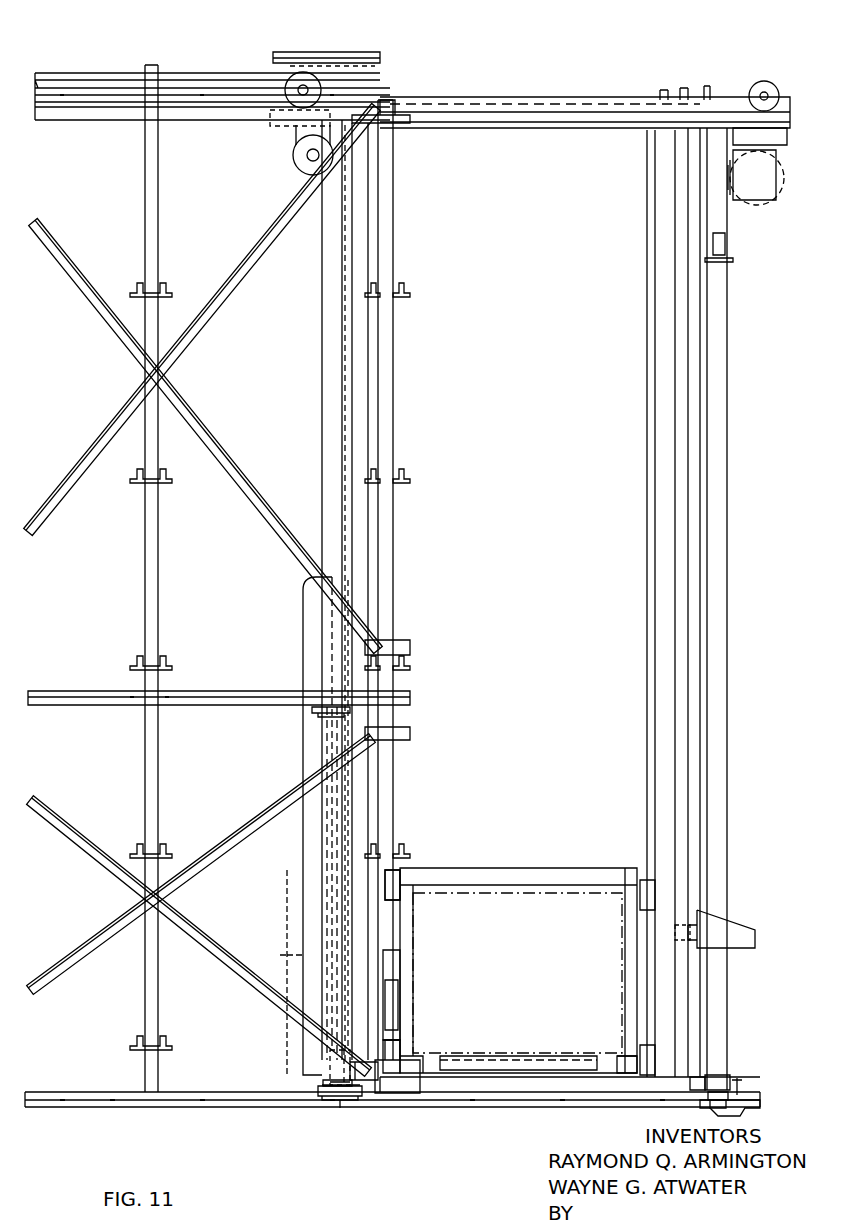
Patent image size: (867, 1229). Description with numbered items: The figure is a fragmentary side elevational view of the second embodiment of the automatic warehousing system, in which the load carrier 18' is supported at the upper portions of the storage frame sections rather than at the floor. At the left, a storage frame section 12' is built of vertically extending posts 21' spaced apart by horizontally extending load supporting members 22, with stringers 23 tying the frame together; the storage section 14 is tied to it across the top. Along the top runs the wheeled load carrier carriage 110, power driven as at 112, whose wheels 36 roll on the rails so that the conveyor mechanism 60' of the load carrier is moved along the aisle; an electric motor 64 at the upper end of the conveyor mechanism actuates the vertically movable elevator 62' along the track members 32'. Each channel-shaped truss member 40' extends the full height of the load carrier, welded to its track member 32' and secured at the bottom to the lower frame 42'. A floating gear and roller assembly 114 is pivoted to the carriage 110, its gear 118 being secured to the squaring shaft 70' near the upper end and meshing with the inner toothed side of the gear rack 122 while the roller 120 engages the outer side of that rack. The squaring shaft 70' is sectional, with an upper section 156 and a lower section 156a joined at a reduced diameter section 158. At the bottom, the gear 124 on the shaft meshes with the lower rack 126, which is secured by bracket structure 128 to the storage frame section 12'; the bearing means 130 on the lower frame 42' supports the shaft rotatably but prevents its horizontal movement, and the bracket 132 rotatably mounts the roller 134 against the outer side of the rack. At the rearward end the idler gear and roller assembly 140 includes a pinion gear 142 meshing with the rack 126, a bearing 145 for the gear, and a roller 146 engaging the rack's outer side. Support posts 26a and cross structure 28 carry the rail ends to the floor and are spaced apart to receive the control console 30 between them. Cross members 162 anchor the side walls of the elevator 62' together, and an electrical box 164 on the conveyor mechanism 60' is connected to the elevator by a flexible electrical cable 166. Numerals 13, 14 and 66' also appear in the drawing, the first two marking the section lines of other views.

The load carrier carriage 110 is at (579, 78).
The power drive 112 is at (296, 166).
The floating gear and roller assembly 114 is at (378, 60).
The gear 118 is at (310, 70).
The roller 120 is at (305, 122).
The gear rack 122 is at (195, 79).
The storage frame section 12' is at (210, 1116).
The pin 13 is at (302, 1084).
The storage section 14 is at (480, 1126).
The load carrier 18' is at (584, 846).
The post 21' is at (265, 578).
The load supporting member 22 is at (135, 292).
The stringer 23 is at (180, 394).
The support post 26a is at (728, 565).
The cross structure 28 is at (730, 237).
The control console 30 is at (745, 934).
The track member 32' is at (519, 588).
The wheel 36 is at (285, 84).
The truss means 40' is at (526, 600).
The lower frame 42' is at (518, 1046).
The conveyor mechanism 60' is at (640, 603).
The elevator 62' is at (518, 951).
The electric motor 64 is at (784, 192).
The platform 66' is at (518, 1050).
The squaring shaft 70' is at (315, 592).
The gear 124 is at (340, 1102).
The lower rack 126 is at (616, 1078).
The bracket structure 128 is at (170, 1094).
The bearing means 130 is at (306, 1070).
The bracket 132 is at (294, 1096).
The roller 134 is at (320, 1120).
The idler gear and roller assembly 140 is at (716, 1066).
The pinion gear 142 is at (724, 1090).
The bearing 145 is at (696, 1072).
The roller 146 is at (740, 1108).
The upper section 156 is at (319, 401).
The lower section 156a is at (314, 742).
The reduced diameter section 158 is at (312, 720).
The cross member 162 is at (434, 870).
The electrical box 164 is at (290, 918).
The flexible electrical cable 166 is at (303, 638).